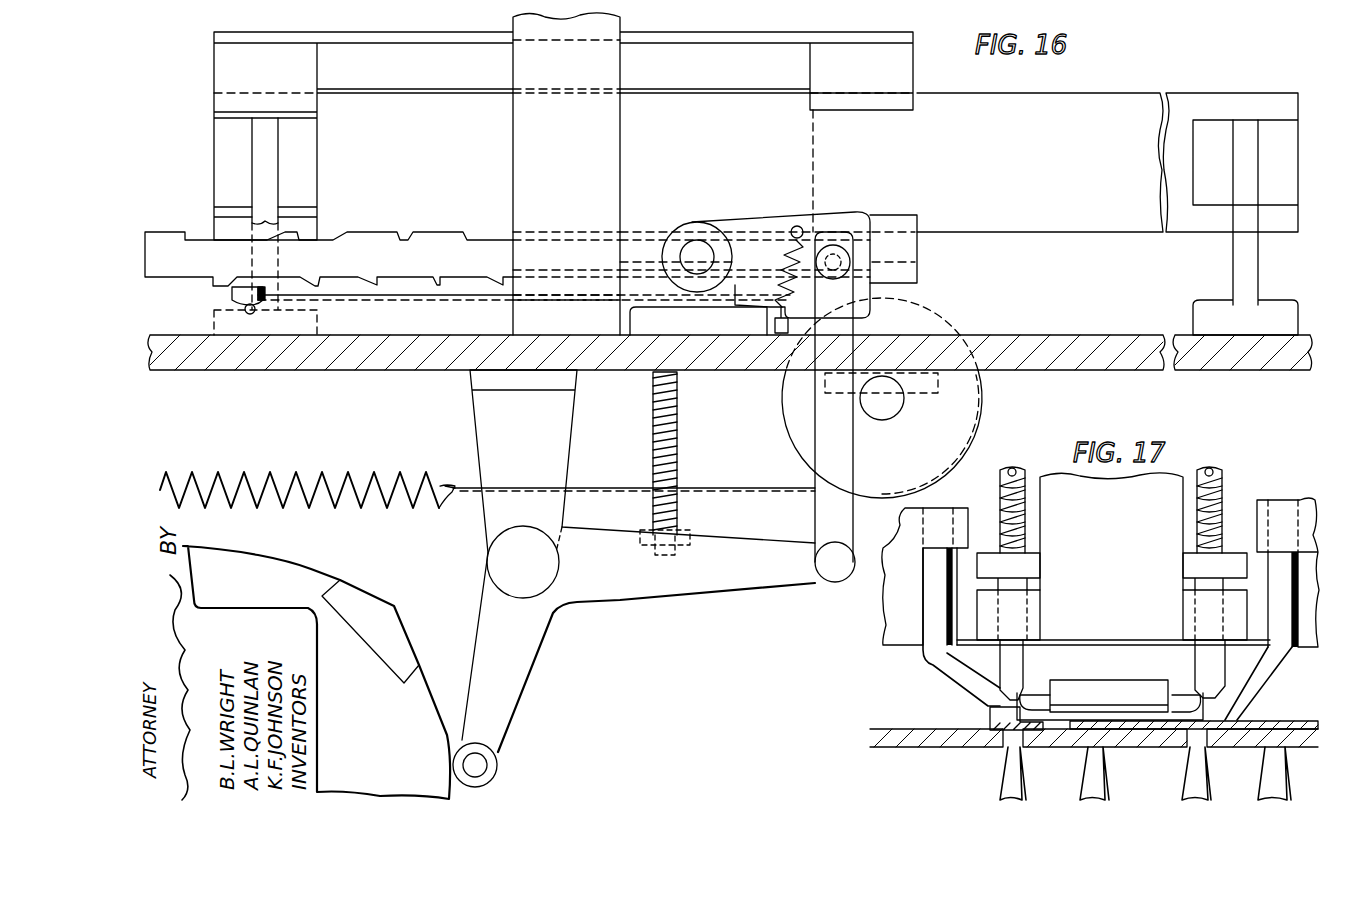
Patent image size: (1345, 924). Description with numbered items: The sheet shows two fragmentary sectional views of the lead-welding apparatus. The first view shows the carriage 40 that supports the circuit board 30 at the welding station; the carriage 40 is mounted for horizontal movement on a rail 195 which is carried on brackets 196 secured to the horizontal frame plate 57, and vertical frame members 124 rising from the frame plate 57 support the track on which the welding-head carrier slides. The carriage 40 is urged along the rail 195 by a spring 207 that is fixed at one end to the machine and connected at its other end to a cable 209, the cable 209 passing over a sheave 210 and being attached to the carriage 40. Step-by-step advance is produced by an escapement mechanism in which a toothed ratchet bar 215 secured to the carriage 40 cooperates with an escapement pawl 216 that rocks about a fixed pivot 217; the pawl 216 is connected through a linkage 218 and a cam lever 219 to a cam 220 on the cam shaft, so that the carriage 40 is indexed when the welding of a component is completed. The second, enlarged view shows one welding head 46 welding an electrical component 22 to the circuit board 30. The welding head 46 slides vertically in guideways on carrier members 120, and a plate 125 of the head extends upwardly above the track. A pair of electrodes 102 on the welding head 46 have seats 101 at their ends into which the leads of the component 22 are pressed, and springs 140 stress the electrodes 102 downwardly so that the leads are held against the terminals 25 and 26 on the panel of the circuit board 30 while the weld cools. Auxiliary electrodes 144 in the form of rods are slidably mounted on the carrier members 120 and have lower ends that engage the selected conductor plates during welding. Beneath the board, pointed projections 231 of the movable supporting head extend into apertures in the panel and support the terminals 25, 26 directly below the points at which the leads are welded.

In FIG. 16, the carriage 40 is at (898, 33).
In FIG. 16, the vertical frame members 124 is at (545, 151).
In FIG. 16, the brackets 196 is at (262, 182).
In FIG. 16, the rail 195 is at (1077, 213).
In FIG. 16, the horizontal frame plate 57 is at (1098, 347).
In FIG. 16, the toothed ratchet bar 215 is at (435, 252).
In FIG. 16, the fixed pivot 217 is at (697, 255).
In FIG. 16, the escapement pawl 216 is at (772, 226).
In FIG. 16, the cable 209 is at (405, 299).
In FIG. 16, the sheave 210 is at (953, 422).
In FIG. 16, the spring 207 is at (345, 473).
In FIG. 16, the linkage 218 is at (830, 513).
In FIG. 16, the cam lever 219 is at (660, 582).
In FIG. 16, the cam 220 is at (392, 628).
In FIG. 17, the welding head 46 is at (1147, 500).
In FIG. 17, the springs 140 is at (1223, 525).
In FIG. 17, the plate 125 is at (968, 578).
In FIG. 17, the carrier members 120 is at (903, 600).
In FIG. 17, the electrodes 102 is at (1013, 658).
In FIG. 17, the auxiliary electrodes 144 is at (967, 677).
In FIG. 17, the terminal 26 is at (987, 717).
In FIG. 17, the circuit board 30 is at (935, 740).
In FIG. 17, the pointed projections 231 is at (1262, 786).
In FIG. 17, the terminal 25 is at (1232, 745).
In FIG. 17, the electrical component 22 is at (1110, 690).
In FIG. 17, the seats 101 is at (1040, 693).